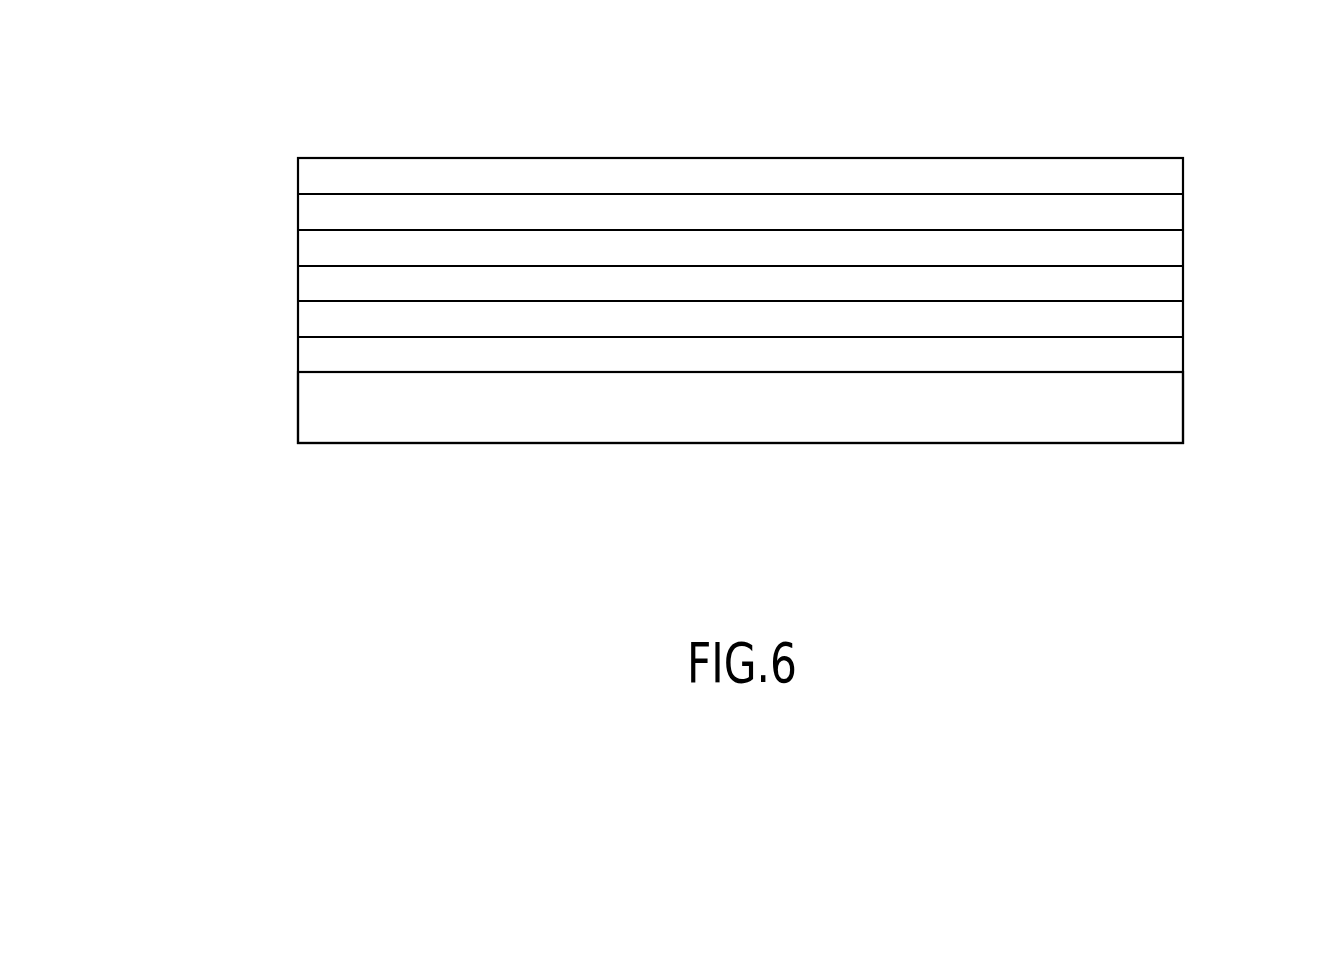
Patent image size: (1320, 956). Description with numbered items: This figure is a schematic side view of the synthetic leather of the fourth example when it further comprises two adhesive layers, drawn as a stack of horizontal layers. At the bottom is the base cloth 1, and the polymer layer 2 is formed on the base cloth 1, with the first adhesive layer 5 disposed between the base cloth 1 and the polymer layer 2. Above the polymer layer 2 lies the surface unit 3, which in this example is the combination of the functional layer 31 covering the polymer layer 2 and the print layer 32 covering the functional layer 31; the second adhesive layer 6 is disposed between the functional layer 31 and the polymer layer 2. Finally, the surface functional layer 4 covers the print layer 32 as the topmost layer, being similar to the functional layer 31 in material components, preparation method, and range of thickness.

The base cloth 1 is at (1183, 407).
The polymer layer 2 is at (1183, 318).
The surface unit 3 is at (134, 229).
The functional layer 31 is at (322, 248).
The print layer 32 is at (322, 212).
The surface functional layer 4 is at (1112, 157).
The first adhesive layer 5 is at (1183, 353).
The second adhesive layer 6 is at (1183, 283).